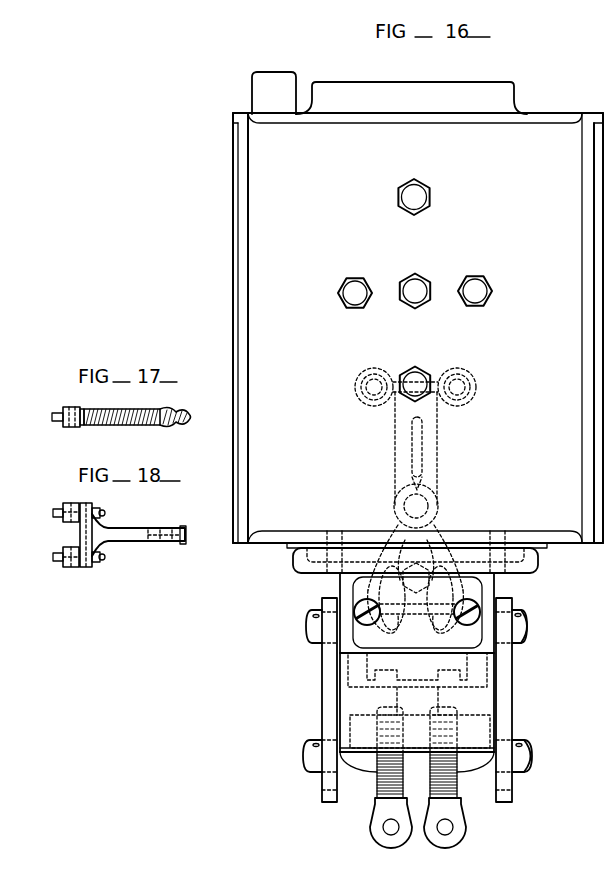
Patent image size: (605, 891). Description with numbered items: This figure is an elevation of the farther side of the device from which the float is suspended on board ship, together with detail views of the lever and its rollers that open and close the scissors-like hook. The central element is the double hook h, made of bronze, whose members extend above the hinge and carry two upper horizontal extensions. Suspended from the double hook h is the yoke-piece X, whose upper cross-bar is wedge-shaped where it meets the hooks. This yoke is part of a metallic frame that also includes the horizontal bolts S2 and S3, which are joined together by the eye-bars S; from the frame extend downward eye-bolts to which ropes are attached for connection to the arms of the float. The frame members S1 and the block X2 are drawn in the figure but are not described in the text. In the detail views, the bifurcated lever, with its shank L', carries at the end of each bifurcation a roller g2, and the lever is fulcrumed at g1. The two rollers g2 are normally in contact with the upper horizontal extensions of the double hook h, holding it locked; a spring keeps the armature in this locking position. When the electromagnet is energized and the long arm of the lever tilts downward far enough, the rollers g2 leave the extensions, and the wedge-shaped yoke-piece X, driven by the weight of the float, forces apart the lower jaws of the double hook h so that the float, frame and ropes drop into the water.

In FIG. 16, the eye-bars S is at (418, 460).
In FIG. 16, the side plates S1 is at (420, 700).
In FIG. 16, the horizontal bolt S2 is at (413, 626).
In FIG. 16, the horizontal bolt S3 is at (412, 756).
In FIG. 16, the roller g2 is at (359, 384).
In FIG. 17, the roller g2 is at (66, 428).
In FIG. 18, the roller g2 is at (70, 546).
In FIG. 17, the fulcrum g1 is at (164, 426).
In FIG. 17, the threaded bolt L' is at (122, 428).
In FIG. 16, the double hook h is at (415, 491).
In FIG. 16, the yoke-piece X is at (416, 586).
In FIG. 16, the terminal block X2 is at (419, 700).